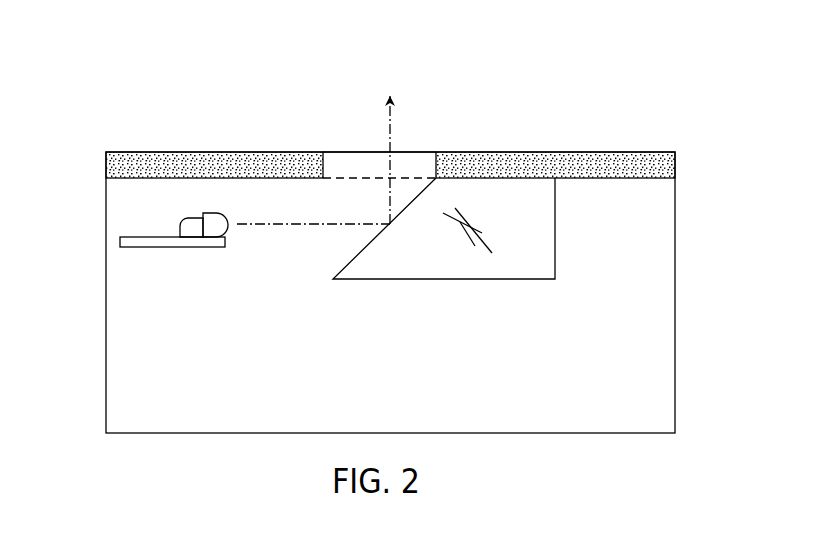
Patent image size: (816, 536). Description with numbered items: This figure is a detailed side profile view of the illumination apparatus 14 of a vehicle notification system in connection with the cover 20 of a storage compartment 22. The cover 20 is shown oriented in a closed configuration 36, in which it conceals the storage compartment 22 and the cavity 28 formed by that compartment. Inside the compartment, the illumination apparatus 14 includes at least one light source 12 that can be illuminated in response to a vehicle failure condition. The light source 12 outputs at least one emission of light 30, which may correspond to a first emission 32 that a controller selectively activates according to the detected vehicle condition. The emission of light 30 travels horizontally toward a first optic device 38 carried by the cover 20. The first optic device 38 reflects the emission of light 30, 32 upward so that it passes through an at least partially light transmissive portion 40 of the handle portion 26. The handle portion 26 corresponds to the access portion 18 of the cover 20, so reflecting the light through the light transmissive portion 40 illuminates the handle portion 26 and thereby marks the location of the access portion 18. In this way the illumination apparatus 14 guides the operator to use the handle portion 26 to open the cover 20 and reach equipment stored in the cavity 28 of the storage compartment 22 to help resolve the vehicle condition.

The light source 12 is at (158, 265).
The illumination apparatus 14 is at (228, 119).
The access portion 18 is at (514, 76).
The cover 20 is at (548, 157).
The storage compartment 22 is at (140, 154).
The handle portion 26 is at (408, 160).
The cavity 28 is at (152, 212).
The emission of light 30 is at (312, 265).
The first emission 32 is at (272, 227).
The closed configuration 36 is at (623, 41).
The first optic device 38 is at (543, 240).
The light transmissive portion 40 is at (394, 126).